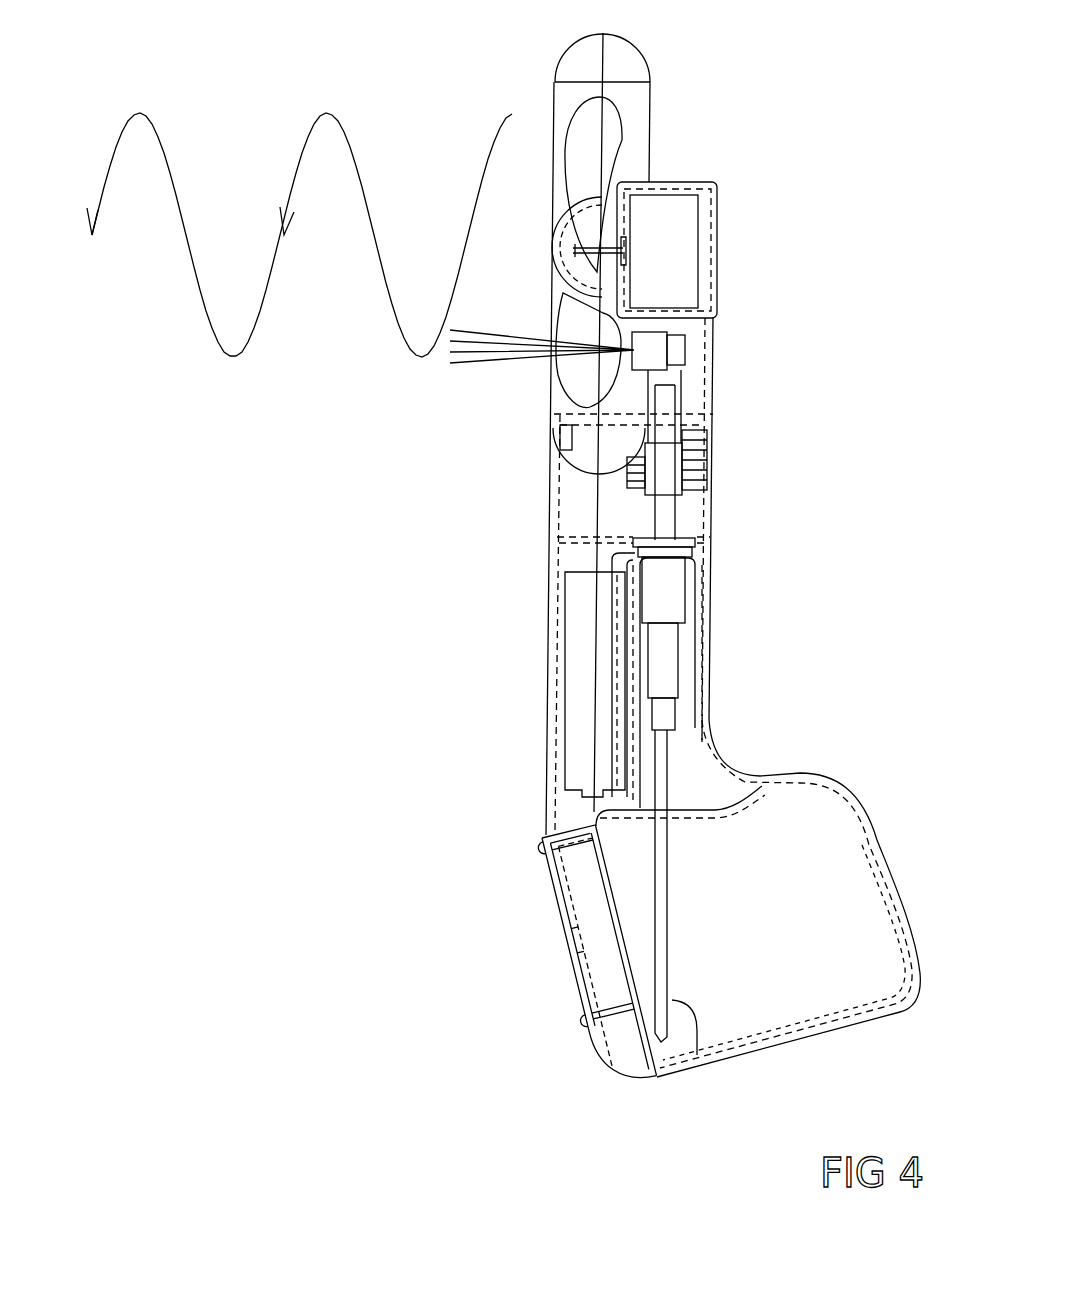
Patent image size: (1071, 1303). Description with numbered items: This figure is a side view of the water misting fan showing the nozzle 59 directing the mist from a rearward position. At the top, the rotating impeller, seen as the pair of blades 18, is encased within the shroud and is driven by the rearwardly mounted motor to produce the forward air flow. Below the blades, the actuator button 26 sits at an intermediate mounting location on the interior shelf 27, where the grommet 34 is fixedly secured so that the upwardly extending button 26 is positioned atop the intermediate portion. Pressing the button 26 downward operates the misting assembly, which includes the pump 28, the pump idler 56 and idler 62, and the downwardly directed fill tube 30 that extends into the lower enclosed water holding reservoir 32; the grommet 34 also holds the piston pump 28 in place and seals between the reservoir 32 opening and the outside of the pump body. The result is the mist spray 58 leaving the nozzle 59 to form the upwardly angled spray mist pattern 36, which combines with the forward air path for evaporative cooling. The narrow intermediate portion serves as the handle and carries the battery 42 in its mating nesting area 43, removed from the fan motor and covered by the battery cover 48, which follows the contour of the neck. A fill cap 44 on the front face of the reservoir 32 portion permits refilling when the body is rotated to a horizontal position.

The blades 18 is at (570, 135).
The actuator button 26 is at (672, 210).
The interior shelf 27 is at (573, 535).
The pump 28 is at (667, 598).
The fill tube 30 is at (697, 1055).
The reservoir 32 is at (782, 926).
The grommet 34 is at (690, 540).
The spray mist pattern 36 is at (298, 157).
The battery 42 is at (583, 693).
The nesting area 43 is at (557, 645).
The fill cap 44 is at (543, 902).
The battery cover 48 is at (815, 150).
The pump idler 56 is at (703, 470).
The mist spray 58 is at (504, 360).
The nozzle 59 is at (685, 340).
The idler 62 is at (583, 443).